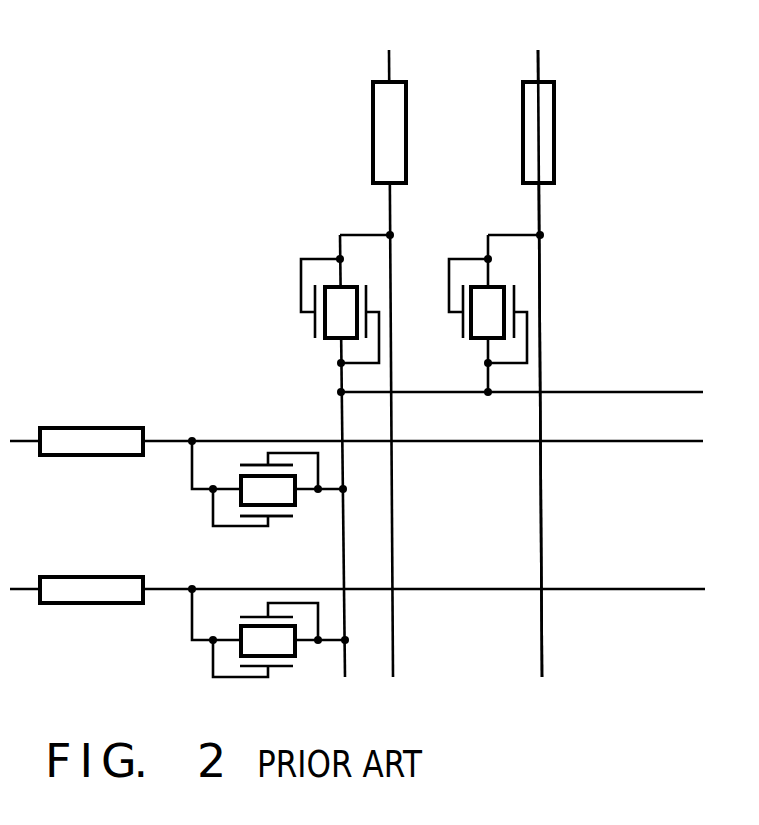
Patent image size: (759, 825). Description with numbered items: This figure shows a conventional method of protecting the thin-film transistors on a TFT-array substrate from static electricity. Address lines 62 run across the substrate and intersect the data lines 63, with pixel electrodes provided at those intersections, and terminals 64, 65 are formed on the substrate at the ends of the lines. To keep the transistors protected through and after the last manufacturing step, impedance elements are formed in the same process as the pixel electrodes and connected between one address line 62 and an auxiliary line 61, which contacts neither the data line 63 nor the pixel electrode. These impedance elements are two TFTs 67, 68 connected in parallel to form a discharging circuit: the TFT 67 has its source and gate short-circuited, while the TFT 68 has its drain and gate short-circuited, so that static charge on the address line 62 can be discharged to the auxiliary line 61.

The auxiliary line 61 is at (570, 393).
The address line 62 is at (461, 590).
The data line 63 is at (541, 308).
The terminal 64 is at (98, 576).
The terminal 65 is at (554, 153).
The TFT 67 is at (243, 463).
The TFT 68 is at (242, 527).